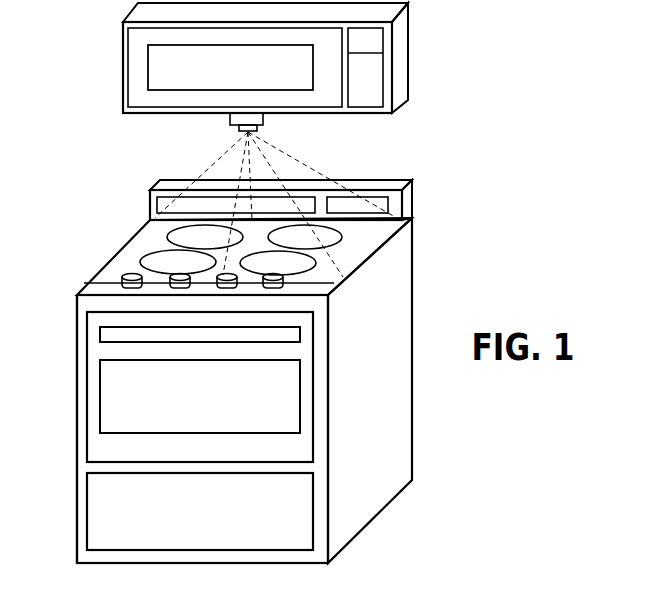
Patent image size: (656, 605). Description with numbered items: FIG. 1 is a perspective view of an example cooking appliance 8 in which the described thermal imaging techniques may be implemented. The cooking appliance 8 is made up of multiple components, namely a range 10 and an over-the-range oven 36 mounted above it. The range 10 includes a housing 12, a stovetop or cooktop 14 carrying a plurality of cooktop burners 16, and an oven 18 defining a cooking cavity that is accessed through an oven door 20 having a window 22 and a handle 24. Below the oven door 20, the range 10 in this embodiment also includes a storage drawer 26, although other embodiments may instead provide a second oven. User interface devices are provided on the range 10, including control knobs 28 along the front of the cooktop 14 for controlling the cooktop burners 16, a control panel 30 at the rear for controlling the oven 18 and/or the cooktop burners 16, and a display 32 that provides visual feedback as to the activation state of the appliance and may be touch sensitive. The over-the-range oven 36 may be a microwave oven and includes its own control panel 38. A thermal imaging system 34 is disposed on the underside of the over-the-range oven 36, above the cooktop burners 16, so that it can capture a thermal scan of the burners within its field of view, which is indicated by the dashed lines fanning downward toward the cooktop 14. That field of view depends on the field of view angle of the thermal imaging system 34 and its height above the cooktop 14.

The cooking appliance 8 is at (74, 90).
The range 10 is at (74, 283).
The housing 12 is at (77, 538).
The cooktop 14 is at (368, 238).
The cooktop burners 16 is at (157, 255).
The oven 18 is at (220, 400).
The oven door 20 is at (87, 413).
The window 22 is at (285, 407).
The handle 24 is at (307, 323).
The storage drawer 26 is at (303, 492).
The control knobs 28 is at (130, 277).
The control panel 30 is at (177, 194).
The display 32 is at (392, 194).
The thermal imaging system 34 is at (263, 118).
The over-the-range oven 36 is at (422, 72).
The control panel 38 is at (382, 42).